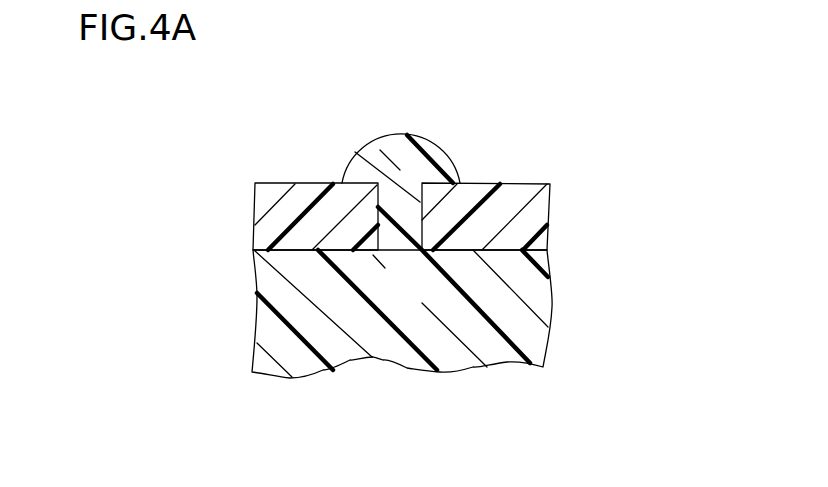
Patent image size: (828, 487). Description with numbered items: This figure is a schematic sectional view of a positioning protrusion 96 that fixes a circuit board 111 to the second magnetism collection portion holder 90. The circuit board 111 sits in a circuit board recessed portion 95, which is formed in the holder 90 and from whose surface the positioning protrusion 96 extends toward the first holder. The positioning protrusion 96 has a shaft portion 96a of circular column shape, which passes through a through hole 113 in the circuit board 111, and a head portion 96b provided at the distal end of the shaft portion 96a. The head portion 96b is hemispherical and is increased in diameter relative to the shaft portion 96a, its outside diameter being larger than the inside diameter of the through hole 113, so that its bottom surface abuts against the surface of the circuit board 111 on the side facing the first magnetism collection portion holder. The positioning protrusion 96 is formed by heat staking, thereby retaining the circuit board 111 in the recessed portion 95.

The positioning protrusion 96 is at (432, 119).
The shaft portion 96a is at (405, 203).
The head portion 96b is at (407, 156).
The circuit board 111 is at (527, 218).
The through hole 113 is at (380, 232).
The circuit board recessed portion 95 is at (533, 298).
The second magnetism collection portion holder 90 is at (457, 314).